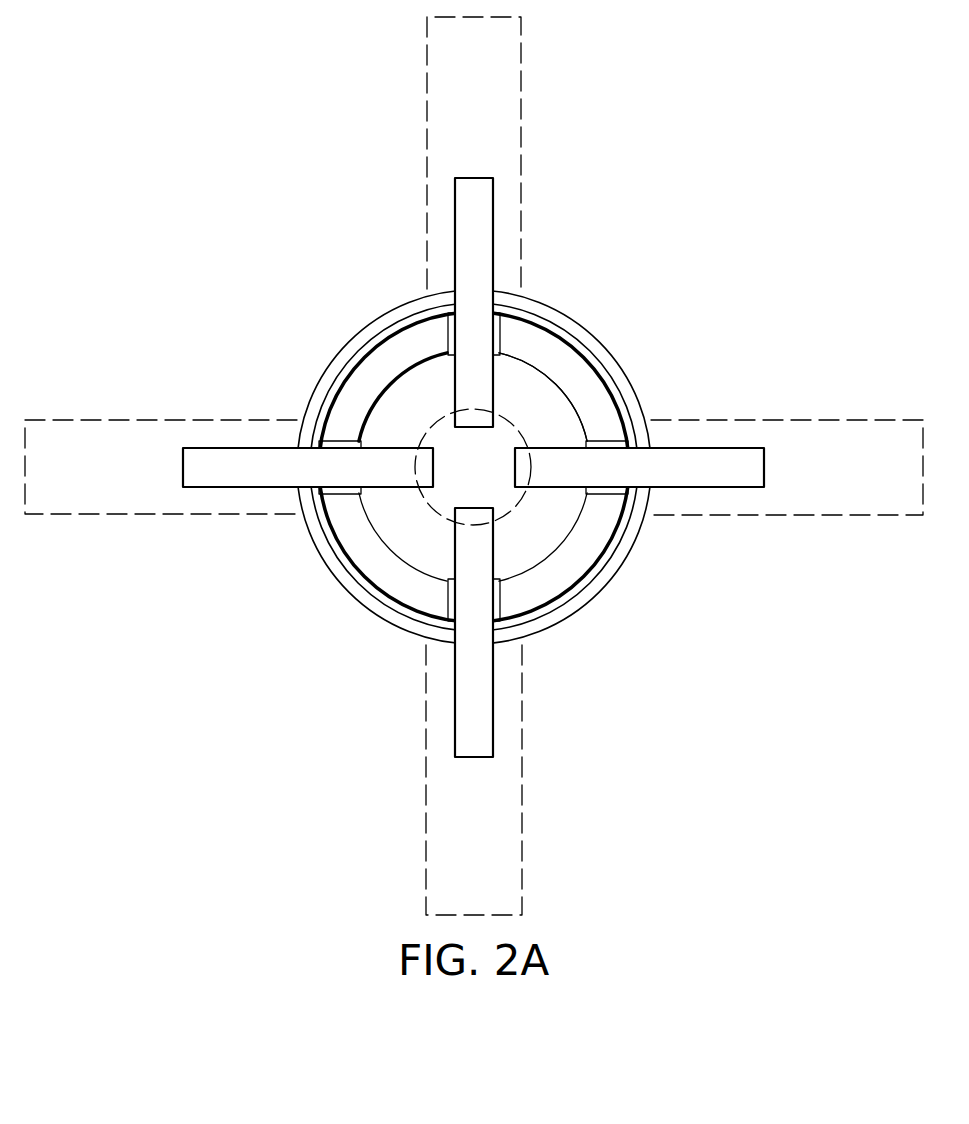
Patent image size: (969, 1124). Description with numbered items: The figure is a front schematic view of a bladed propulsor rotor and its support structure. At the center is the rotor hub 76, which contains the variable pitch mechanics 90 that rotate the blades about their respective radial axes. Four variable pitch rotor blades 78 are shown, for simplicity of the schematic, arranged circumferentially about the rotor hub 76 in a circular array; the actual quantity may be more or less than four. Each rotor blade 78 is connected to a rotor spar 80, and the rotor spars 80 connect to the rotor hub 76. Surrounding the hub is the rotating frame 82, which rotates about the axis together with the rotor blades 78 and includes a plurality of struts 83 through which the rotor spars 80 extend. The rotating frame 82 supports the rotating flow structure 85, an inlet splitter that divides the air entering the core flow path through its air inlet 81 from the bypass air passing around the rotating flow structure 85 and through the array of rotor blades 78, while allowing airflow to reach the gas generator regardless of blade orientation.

The rotor hub 76 is at (425, 495).
The variable pitch rotor blades 78 is at (147, 420).
The rotor spar 80 is at (764, 467).
The air inlet 81 is at (583, 552).
The rotating frame 82 is at (548, 332).
The struts 83 is at (580, 416).
The rotating flow structure 85 is at (397, 305).
The variable pitch mechanics 90 is at (437, 413).